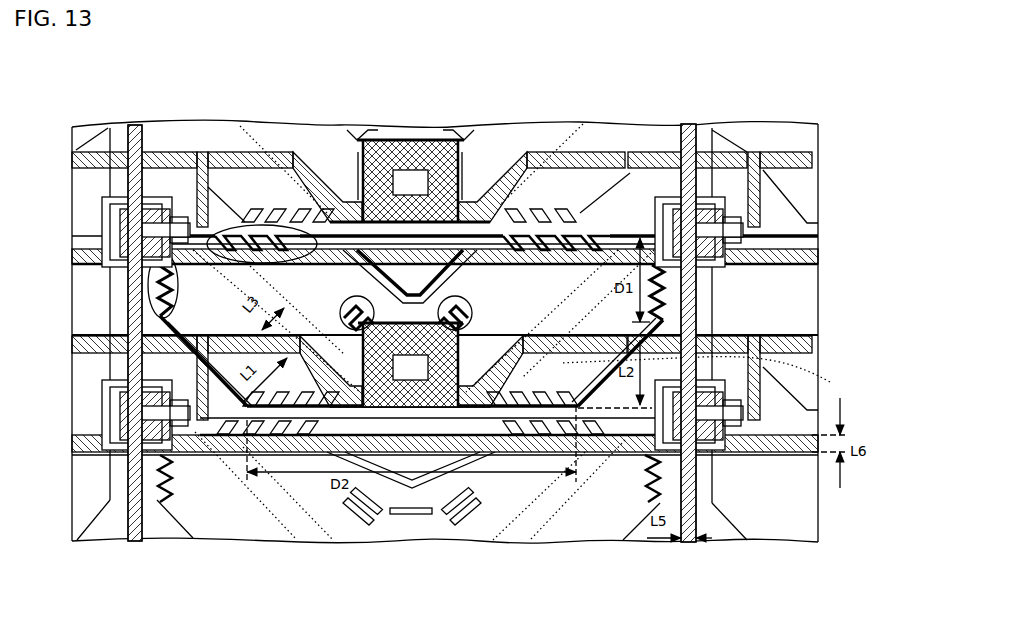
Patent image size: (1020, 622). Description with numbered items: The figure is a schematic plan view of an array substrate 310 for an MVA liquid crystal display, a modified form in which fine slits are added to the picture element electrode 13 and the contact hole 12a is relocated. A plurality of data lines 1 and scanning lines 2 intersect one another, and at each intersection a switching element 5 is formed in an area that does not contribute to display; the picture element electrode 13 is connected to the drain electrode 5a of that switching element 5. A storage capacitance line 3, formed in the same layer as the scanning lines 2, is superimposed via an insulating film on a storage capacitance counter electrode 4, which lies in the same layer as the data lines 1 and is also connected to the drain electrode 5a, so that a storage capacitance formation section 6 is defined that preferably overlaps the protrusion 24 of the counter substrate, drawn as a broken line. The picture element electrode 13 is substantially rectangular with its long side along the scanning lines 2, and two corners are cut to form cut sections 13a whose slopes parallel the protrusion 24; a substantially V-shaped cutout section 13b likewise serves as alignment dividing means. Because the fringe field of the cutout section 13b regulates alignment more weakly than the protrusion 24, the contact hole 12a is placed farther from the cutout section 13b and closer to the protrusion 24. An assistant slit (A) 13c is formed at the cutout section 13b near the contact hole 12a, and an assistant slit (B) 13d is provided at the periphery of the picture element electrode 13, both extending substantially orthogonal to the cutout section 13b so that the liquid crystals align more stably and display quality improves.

The data line 1 is at (135, 542).
The scanning line 2 is at (278, 200).
The storage capacitance line 3 is at (86, 354).
The storage capacitance counter electrode 4 is at (366, 294).
The switching element 5 is at (97, 214).
The drain electrode 5a is at (193, 452).
The storage capacitance formation section 6 is at (412, 489).
The contact hole 12a is at (459, 341).
The picture element electrode 13 is at (598, 242).
The cut section 13a is at (222, 412).
The cutout section 13b is at (448, 232).
The assistant slit (A) 13c is at (370, 298).
The assistant slit (B) 13d is at (222, 262).
The protrusion 24 is at (706, 376).
The array substrate 310 is at (765, 90).